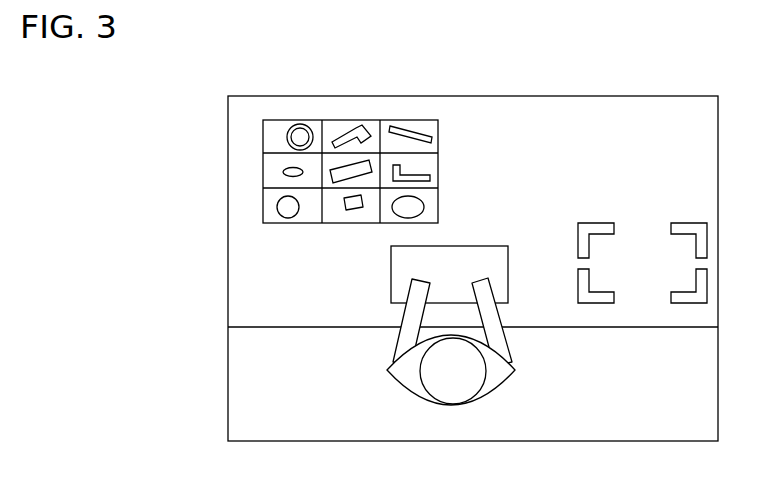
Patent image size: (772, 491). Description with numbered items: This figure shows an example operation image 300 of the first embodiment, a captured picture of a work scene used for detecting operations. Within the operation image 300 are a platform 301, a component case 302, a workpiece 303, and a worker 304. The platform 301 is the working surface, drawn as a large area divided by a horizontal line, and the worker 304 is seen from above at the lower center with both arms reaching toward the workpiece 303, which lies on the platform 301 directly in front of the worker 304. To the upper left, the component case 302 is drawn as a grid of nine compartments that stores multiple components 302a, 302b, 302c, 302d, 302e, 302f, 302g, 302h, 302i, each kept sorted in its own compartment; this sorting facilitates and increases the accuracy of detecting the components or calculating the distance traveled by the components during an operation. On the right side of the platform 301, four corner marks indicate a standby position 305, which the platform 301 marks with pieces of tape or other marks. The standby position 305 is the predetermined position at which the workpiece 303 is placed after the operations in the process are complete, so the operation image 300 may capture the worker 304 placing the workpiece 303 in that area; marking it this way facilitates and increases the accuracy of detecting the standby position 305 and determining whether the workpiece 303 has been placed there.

The operation image 300 is at (557, 96).
The platform 301 is at (307, 310).
The component case 302 is at (440, 142).
The component 302a is at (308, 124).
The component 302b is at (363, 130).
The component 302c is at (410, 137).
The component 302d is at (298, 173).
The component 302e is at (335, 178).
The component 302f is at (427, 175).
The component 302g is at (287, 212).
The component 302h is at (357, 210).
The component 302i is at (420, 205).
The workpiece 303 is at (475, 245).
The worker 304 is at (503, 375).
The standby position 305 is at (650, 263).